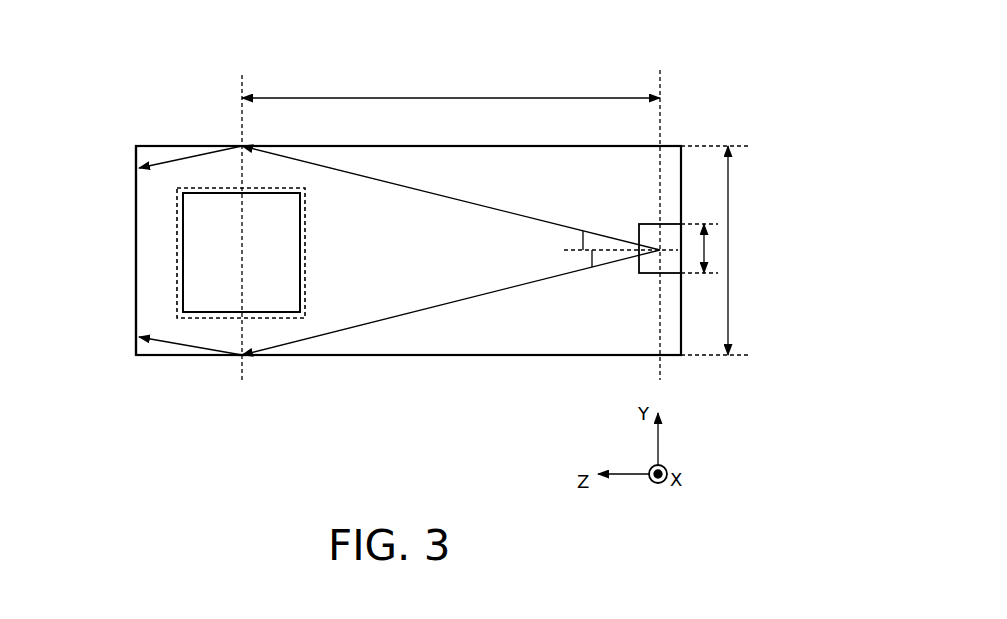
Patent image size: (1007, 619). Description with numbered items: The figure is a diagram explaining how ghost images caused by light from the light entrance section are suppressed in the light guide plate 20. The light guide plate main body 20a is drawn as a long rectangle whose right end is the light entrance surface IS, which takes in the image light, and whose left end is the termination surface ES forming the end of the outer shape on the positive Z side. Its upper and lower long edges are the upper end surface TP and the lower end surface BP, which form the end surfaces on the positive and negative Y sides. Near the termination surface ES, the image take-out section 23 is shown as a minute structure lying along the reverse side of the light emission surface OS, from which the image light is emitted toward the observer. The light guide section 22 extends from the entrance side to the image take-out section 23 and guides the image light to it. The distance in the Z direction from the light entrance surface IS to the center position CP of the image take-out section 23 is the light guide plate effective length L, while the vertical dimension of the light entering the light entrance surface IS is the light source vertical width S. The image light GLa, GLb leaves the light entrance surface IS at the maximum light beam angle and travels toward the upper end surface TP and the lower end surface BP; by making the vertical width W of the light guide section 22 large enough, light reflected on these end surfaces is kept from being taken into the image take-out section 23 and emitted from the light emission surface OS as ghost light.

The light guide plate 20 is at (616, 64).
The light guide plate main body 20a is at (581, 128).
The light guide section 22 is at (485, 146).
The image take-out section 23 is at (257, 188).
The upper end surface TP is at (380, 146).
The lower end surface BP is at (393, 355).
The termination surface ES is at (136, 227).
The light emission surface OS is at (193, 242).
The center position CP is at (243, 364).
The light entrance surface IS is at (663, 236).
The image light GLa is at (457, 199).
The image light GLb is at (492, 293).
The light guide plate effective length L is at (452, 98).
The vertical width W is at (729, 201).
The light source vertical width S is at (707, 238).